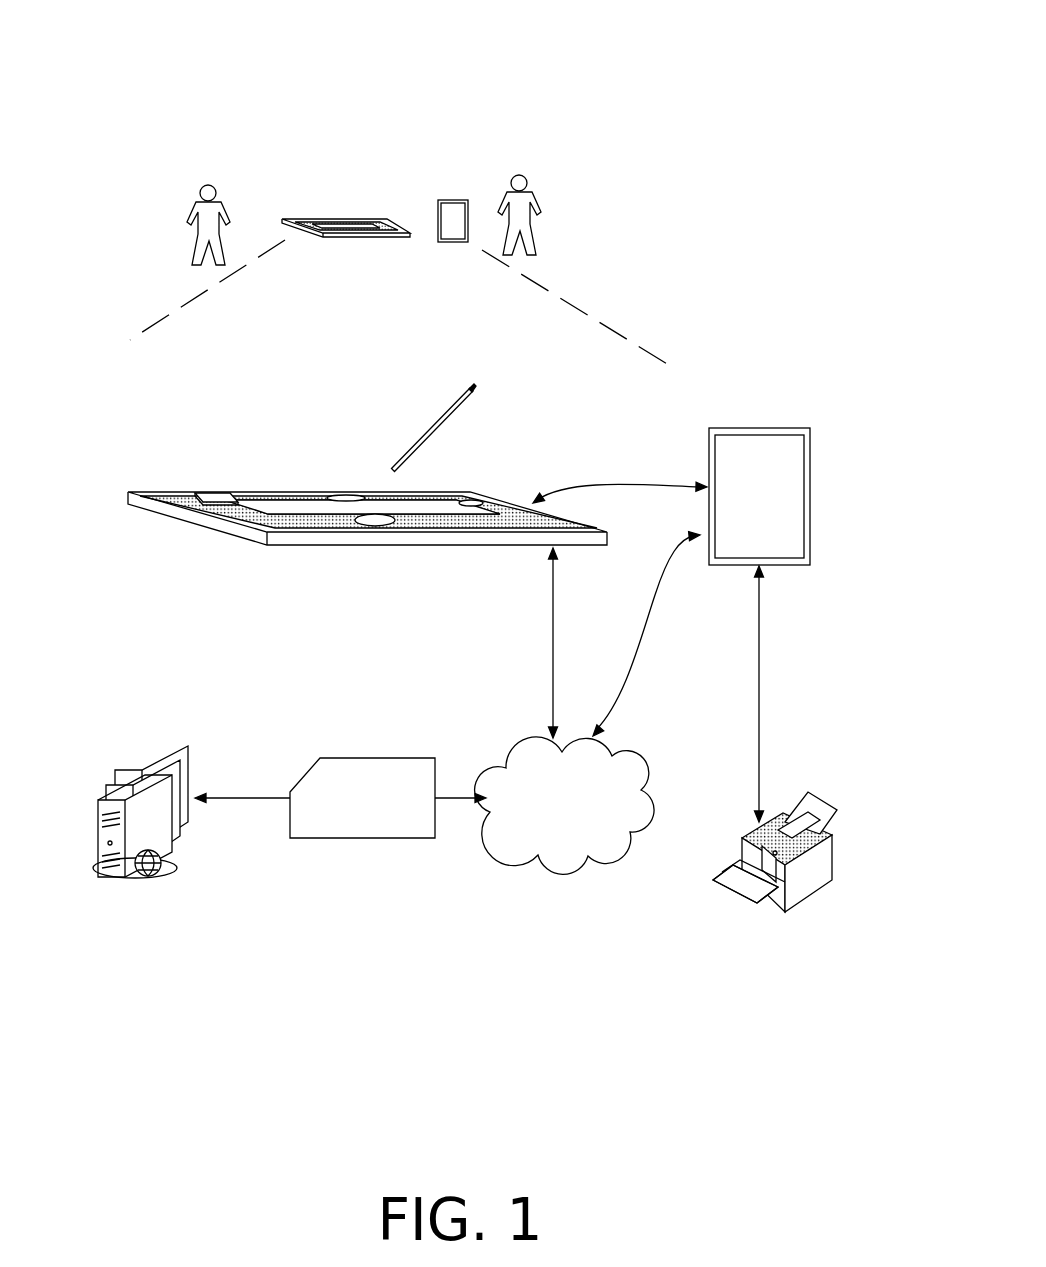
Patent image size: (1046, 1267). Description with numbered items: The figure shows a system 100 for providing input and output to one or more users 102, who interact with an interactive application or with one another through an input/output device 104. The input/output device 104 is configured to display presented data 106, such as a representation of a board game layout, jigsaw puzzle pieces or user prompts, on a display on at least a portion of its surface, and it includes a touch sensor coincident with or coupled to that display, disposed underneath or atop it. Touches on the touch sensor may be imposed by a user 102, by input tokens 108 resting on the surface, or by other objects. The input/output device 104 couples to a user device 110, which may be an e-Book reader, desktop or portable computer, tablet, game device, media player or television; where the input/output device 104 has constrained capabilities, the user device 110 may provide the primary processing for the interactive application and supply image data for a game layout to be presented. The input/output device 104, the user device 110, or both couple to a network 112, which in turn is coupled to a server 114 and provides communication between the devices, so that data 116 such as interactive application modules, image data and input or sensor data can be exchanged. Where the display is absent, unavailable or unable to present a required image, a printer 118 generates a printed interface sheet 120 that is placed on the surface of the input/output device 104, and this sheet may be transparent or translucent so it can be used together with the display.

The system 100 is at (752, 46).
The users 102 is at (387, 248).
The input/output device 104 is at (312, 537).
The presented data 106 is at (280, 492).
The input tokens 108 is at (347, 353).
The user device 110 is at (761, 470).
The network 112 is at (564, 805).
The server 114 is at (140, 843).
The data 116 is at (362, 798).
The printer 118 is at (775, 885).
The printed interface sheet 120 is at (742, 880).